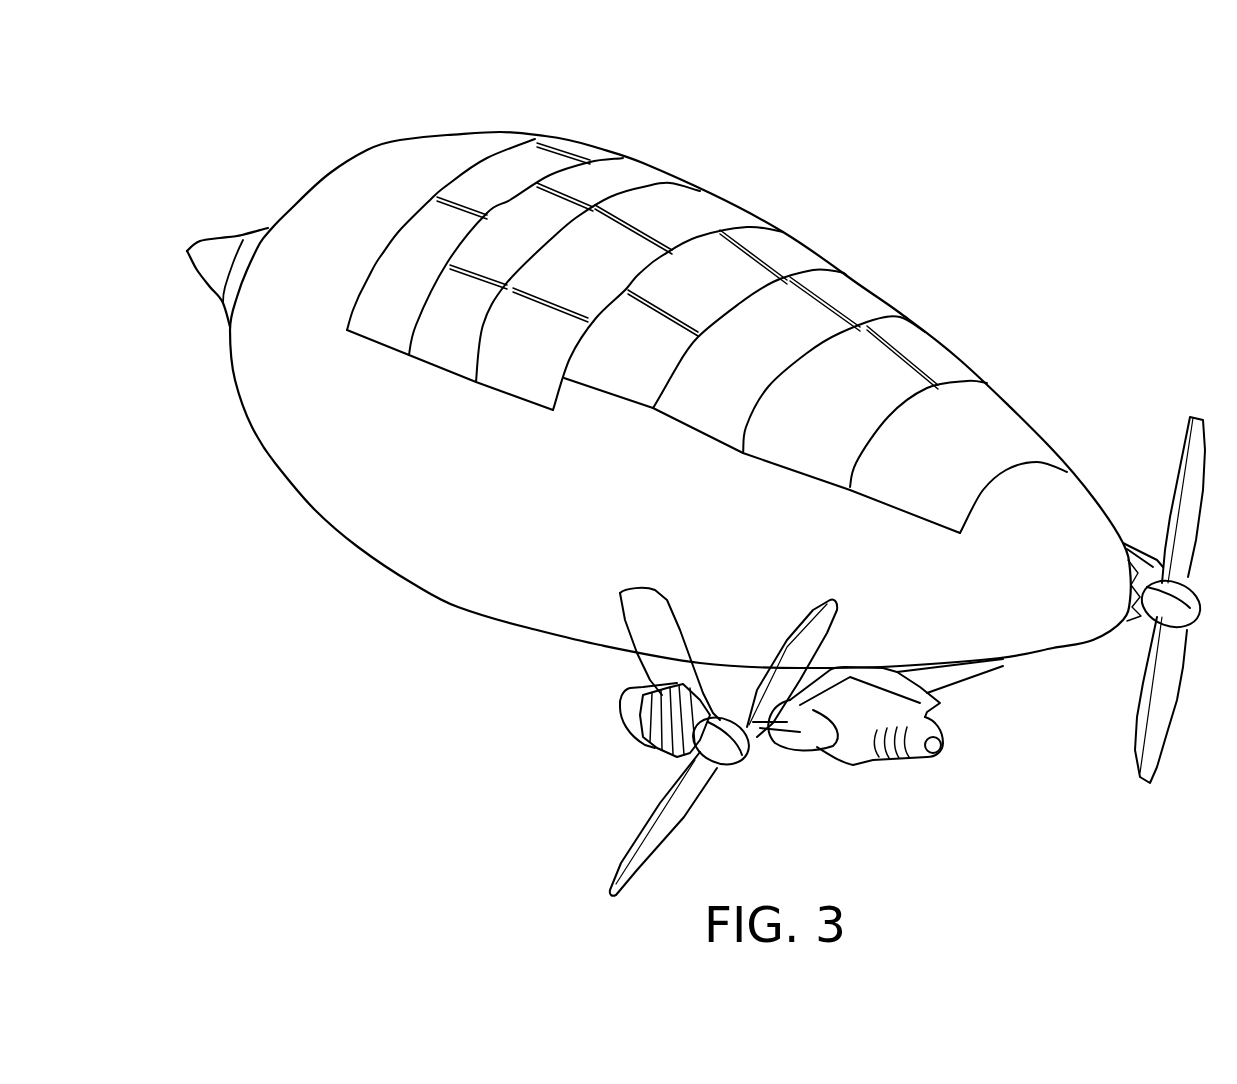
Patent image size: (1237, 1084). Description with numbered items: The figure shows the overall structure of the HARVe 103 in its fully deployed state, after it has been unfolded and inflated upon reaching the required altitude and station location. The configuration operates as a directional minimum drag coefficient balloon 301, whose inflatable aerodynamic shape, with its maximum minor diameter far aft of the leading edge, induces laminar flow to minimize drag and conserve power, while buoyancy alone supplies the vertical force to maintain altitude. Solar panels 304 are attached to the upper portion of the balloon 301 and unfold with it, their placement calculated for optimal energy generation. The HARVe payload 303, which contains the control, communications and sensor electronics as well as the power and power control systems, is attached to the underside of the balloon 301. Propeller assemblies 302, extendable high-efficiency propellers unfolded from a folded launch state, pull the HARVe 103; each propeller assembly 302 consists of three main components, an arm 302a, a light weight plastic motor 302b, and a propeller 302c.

The HARVe 103 is at (842, 137).
The balloon 301 is at (323, 510).
The propeller assembly 302 is at (1170, 497).
The arm 302a is at (660, 661).
The motor 302b is at (647, 760).
The propeller 302c is at (632, 852).
The HARVe payload 303 is at (857, 767).
The solar panels 304 is at (940, 360).